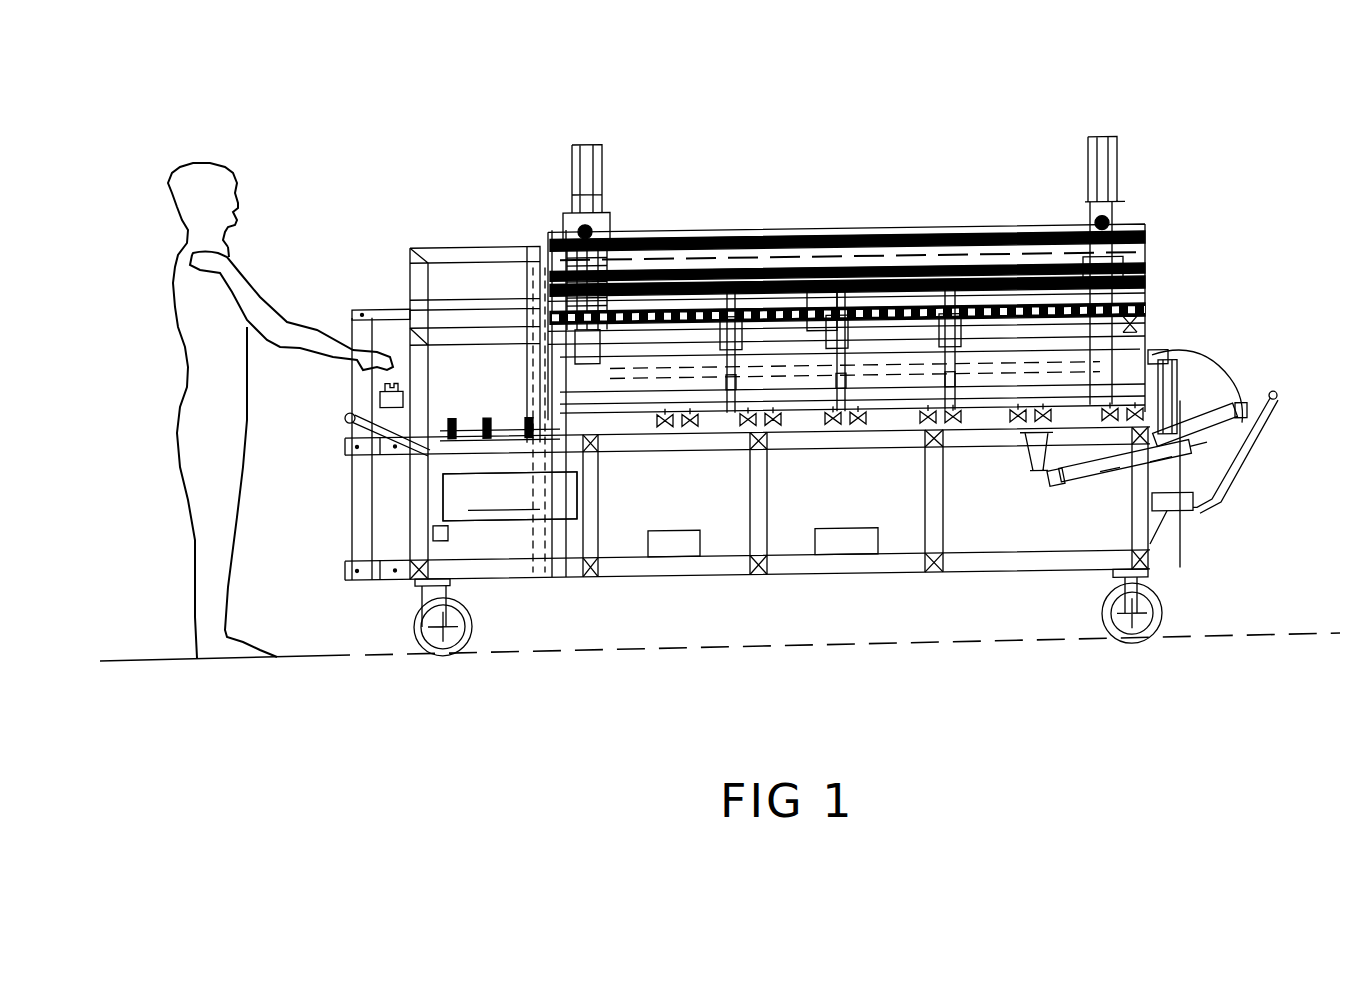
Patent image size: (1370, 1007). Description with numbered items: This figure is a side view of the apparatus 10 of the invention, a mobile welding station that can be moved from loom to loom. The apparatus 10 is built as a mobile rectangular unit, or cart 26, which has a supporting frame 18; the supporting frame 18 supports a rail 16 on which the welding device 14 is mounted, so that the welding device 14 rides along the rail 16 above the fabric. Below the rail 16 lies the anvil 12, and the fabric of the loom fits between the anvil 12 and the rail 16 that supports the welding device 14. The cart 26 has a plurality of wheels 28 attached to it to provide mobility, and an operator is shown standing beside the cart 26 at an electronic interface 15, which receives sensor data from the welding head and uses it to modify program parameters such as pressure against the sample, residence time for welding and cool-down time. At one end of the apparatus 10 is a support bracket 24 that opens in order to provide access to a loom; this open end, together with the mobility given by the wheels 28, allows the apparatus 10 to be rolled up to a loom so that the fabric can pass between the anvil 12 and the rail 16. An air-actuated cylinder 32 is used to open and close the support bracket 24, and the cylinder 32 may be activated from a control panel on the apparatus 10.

The apparatus 10 is at (657, 691).
The anvil 12 is at (638, 410).
The welding device 14 is at (608, 226).
The electronic interface 15 is at (495, 490).
The rail 16 is at (1150, 273).
The supporting frame 18 is at (420, 270).
The support bracket 24 is at (1143, 408).
The cart 26 is at (722, 578).
The wheels 28 is at (418, 647).
The air-actuated cylinder 32 is at (1095, 483).